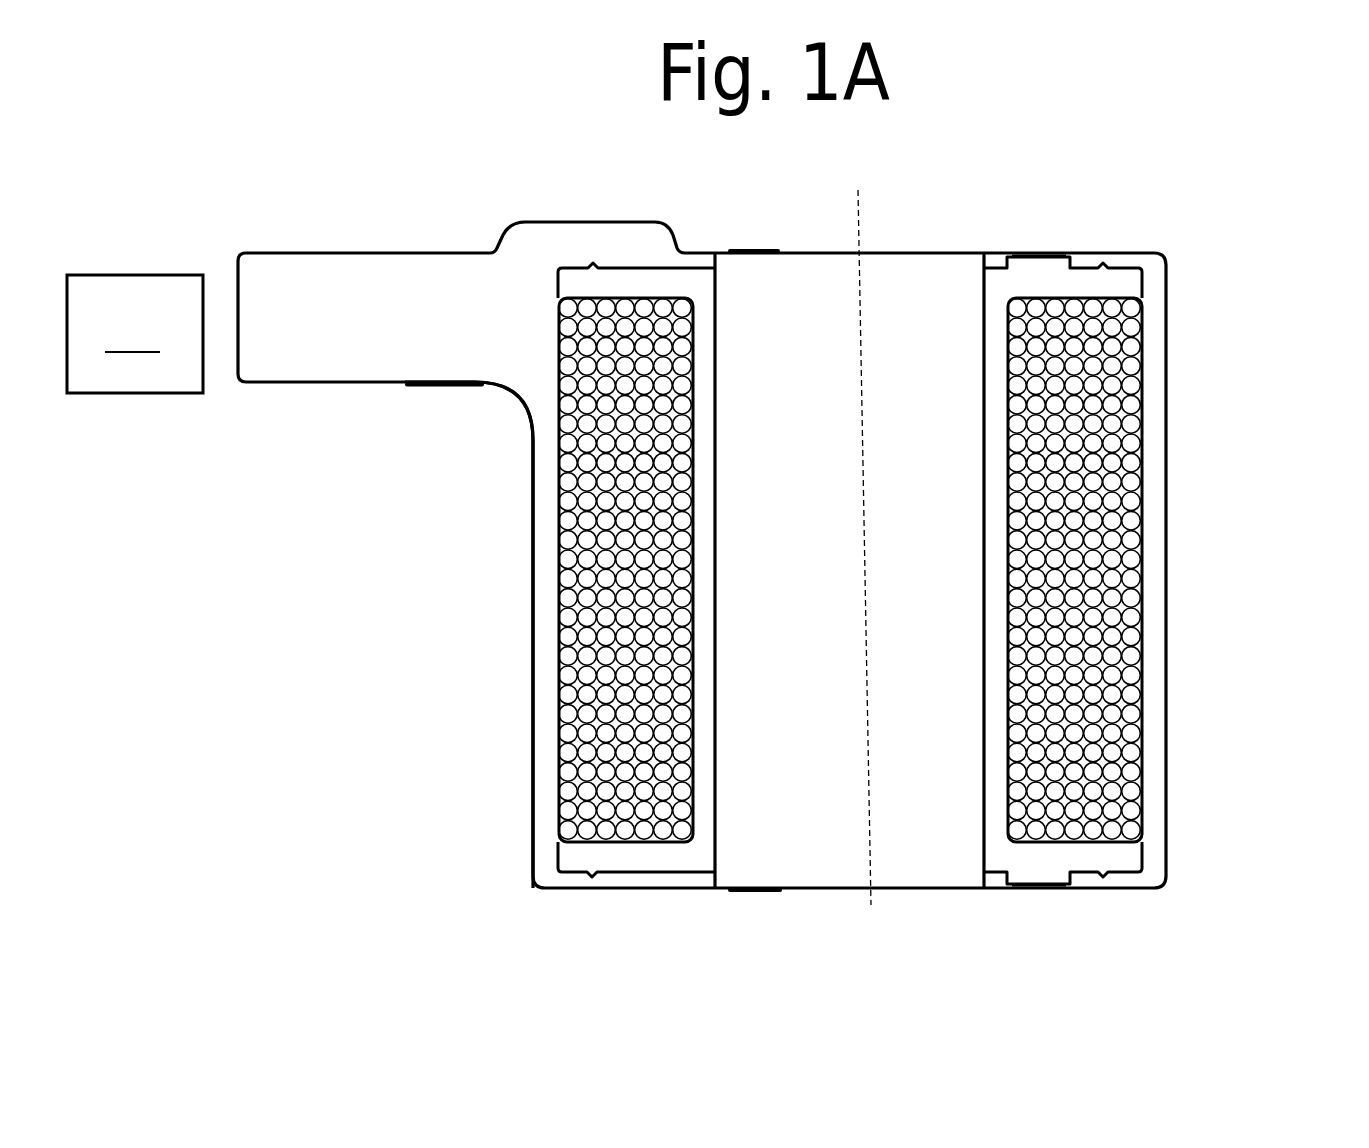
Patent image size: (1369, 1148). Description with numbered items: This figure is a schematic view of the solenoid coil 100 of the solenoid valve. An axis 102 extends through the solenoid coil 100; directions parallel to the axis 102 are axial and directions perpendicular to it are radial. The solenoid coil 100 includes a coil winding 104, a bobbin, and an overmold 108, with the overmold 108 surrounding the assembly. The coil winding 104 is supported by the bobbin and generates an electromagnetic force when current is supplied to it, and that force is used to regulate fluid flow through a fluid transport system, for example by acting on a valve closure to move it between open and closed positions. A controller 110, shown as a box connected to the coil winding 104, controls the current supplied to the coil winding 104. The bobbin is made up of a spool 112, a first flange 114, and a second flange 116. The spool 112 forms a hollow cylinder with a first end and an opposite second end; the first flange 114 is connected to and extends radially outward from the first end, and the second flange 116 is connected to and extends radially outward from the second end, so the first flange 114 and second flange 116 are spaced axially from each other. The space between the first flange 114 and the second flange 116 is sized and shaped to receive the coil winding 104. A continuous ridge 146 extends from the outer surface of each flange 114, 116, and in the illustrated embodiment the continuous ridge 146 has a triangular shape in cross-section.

The solenoid coil 100 is at (1207, 253).
The axis 102 is at (858, 233).
The coil winding 104 is at (1110, 510).
The overmold 108 is at (540, 582).
The controller 110 is at (560, 333).
The spool 112 is at (995, 710).
The first flange 114 is at (641, 285).
The second flange 116 is at (638, 852).
The continuous ridge 146 is at (1103, 266).